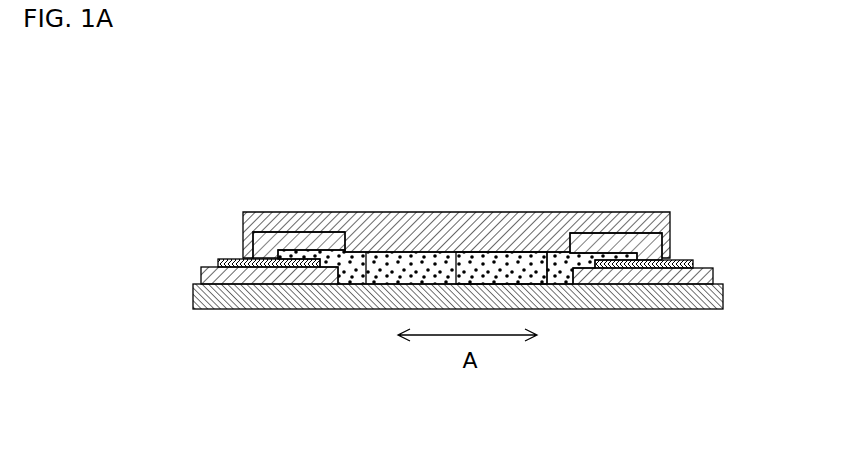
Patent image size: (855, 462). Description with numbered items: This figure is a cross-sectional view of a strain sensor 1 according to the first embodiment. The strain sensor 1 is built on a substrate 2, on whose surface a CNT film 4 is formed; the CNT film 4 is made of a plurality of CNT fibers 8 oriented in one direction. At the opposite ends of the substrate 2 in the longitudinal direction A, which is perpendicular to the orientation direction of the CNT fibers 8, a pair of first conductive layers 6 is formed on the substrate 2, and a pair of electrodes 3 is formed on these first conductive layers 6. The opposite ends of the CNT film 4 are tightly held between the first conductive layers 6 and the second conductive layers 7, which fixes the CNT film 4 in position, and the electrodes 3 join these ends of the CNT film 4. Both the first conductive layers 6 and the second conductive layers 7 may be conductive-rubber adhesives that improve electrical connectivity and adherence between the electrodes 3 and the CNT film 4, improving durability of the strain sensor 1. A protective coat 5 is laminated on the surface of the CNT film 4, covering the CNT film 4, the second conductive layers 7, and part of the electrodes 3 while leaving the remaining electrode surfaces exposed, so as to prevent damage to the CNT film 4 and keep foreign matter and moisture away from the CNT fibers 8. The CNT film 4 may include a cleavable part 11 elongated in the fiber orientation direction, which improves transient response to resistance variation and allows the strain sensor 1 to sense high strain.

The strain sensor 1 is at (683, 138).
The substrate 2 is at (708, 298).
The electrodes 3 is at (693, 262).
The CNT film 4 is at (482, 255).
The protective coat 5 is at (670, 230).
The first conductive layers 6 is at (201, 275).
The second conductive layers 7 is at (252, 242).
The CNT fibers 8 is at (512, 262).
The cleavable part 11 is at (375, 250).